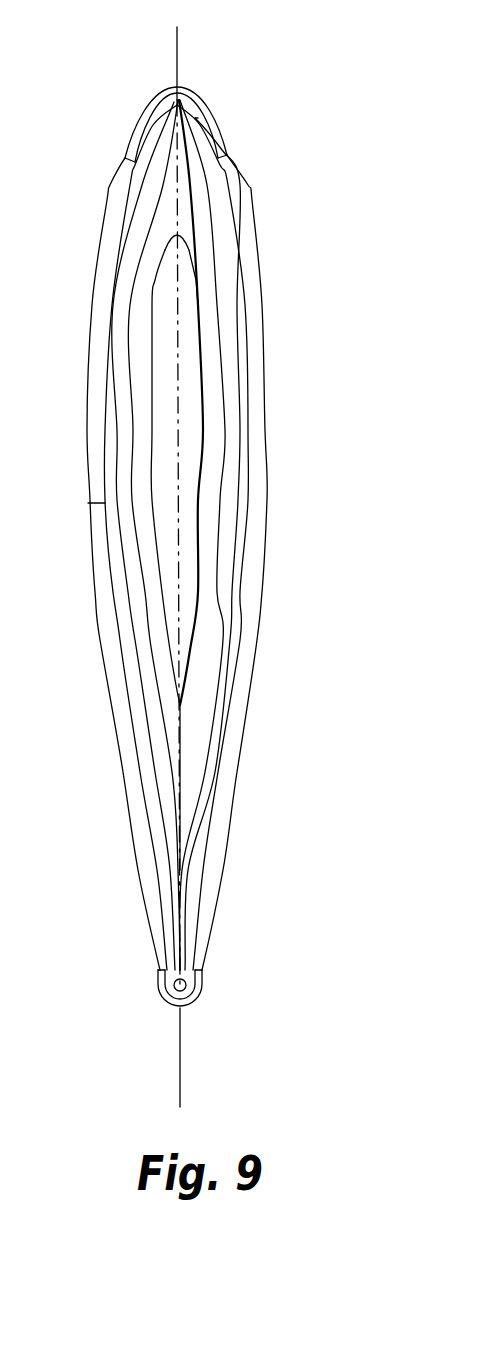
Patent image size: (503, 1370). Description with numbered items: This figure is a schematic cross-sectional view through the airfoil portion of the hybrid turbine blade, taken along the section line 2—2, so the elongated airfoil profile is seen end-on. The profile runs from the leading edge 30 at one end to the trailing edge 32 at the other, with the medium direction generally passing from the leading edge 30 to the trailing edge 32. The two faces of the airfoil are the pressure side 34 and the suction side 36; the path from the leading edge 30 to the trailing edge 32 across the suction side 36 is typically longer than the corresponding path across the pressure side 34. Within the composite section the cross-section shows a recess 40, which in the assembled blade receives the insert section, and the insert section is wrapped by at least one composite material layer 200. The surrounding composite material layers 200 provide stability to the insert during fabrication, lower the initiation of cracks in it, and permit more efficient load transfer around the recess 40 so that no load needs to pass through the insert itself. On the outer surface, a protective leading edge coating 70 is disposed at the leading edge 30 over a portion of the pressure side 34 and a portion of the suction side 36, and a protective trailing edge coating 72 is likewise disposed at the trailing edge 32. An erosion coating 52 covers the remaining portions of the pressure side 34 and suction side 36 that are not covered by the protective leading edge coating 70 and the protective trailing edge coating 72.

The section line 2— 2 is at (262, 22).
The leading edge 30 is at (215, 193).
The trailing edge 32 is at (186, 983).
The pressure side 34 is at (245, 580).
The suction side 36 is at (88, 504).
The recess 40 is at (152, 428).
The erosion coating 52 is at (97, 338).
The protective leading edge coating 70 is at (158, 110).
The protective trailing edge coating 72 is at (158, 983).
The composite material layer 200 is at (240, 292).